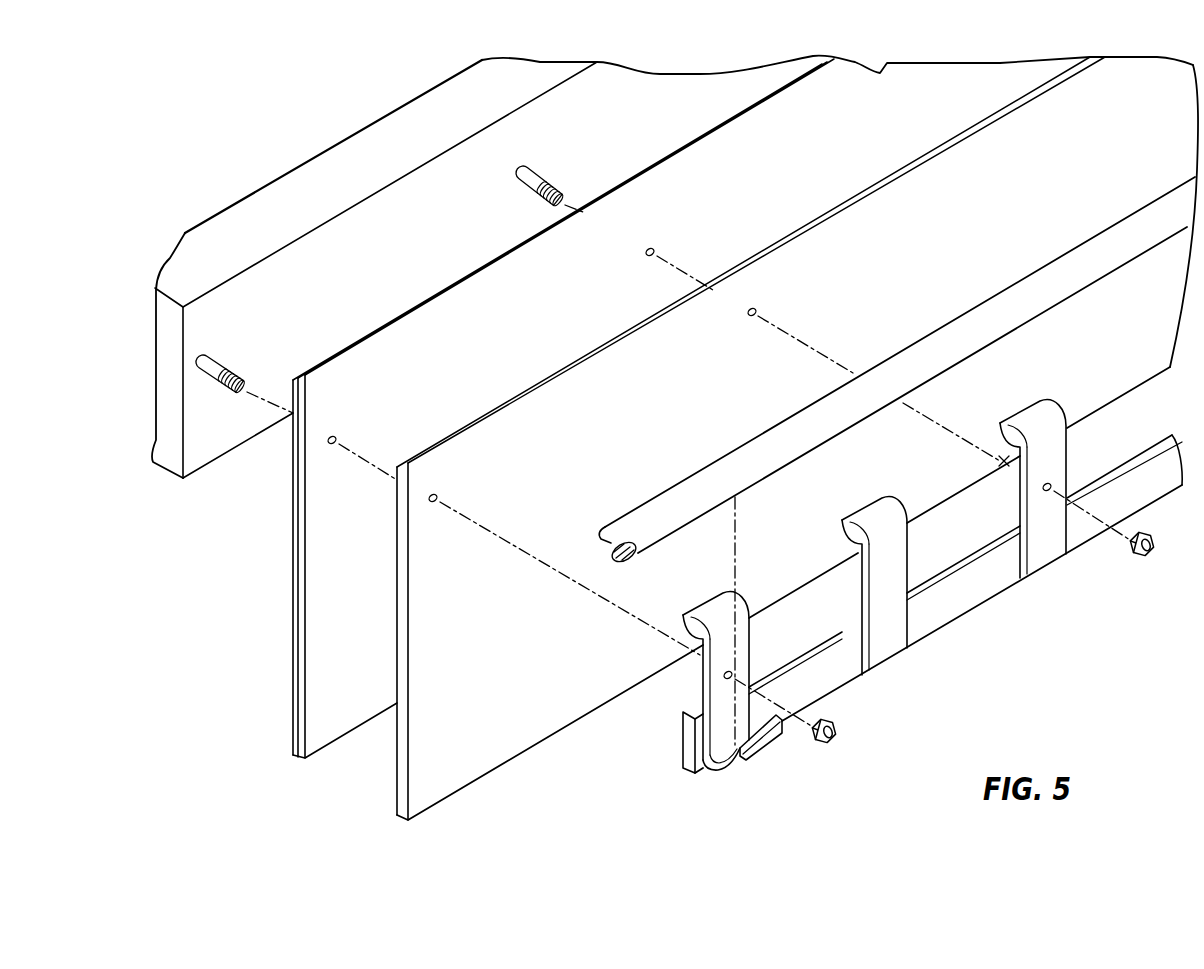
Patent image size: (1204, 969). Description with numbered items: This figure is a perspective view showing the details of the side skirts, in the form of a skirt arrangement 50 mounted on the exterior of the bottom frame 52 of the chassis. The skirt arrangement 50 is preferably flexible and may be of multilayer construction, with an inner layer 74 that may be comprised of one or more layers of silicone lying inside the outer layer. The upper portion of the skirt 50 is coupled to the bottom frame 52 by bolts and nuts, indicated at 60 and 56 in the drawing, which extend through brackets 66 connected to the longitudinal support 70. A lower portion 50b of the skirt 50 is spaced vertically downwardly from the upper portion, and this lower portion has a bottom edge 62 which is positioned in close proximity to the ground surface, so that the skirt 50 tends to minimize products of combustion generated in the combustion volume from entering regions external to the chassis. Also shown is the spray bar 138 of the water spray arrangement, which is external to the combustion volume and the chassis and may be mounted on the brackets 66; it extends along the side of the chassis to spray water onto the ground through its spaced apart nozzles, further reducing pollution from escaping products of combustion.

The skirt arrangement 50 is at (482, 802).
The lower portion of the skirt 50b is at (402, 840).
The bottom frame 52 is at (200, 452).
The hanger 56 is at (887, 638).
The nut 60 is at (820, 745).
The bottom edge 62 is at (478, 747).
The bracket 66 is at (700, 685).
The longitudinal support 70 is at (953, 603).
The inner layer 74 is at (313, 738).
The spray bar 138 is at (1093, 285).